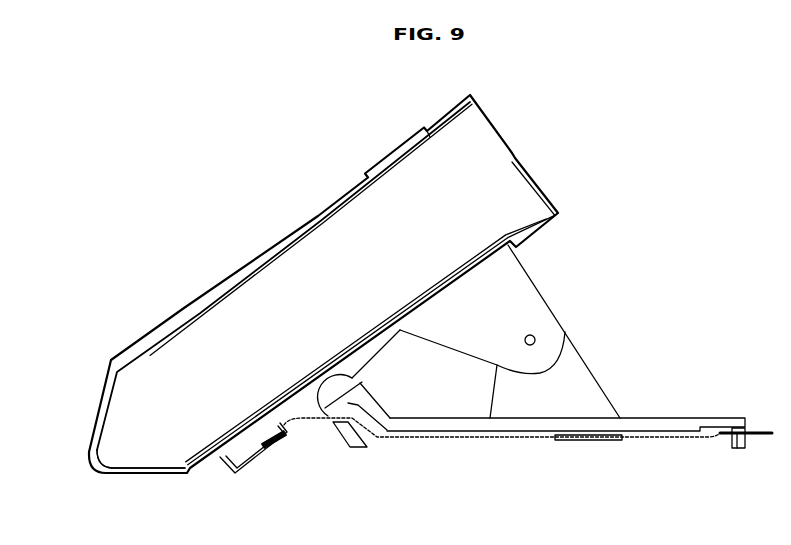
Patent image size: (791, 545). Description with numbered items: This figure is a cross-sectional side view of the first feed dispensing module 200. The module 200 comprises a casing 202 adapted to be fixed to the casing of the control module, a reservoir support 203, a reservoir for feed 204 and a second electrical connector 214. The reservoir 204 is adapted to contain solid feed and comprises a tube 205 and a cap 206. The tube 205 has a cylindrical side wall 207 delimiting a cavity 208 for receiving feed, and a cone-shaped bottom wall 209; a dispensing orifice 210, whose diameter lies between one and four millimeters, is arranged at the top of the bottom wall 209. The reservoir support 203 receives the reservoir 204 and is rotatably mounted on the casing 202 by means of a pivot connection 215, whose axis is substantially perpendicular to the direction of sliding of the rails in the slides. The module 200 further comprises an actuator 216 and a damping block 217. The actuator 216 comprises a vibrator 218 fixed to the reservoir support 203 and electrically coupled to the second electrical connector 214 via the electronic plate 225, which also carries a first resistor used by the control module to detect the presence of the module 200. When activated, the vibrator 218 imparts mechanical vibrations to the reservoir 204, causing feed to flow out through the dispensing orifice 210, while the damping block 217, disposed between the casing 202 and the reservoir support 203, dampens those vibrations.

The first feed dispensing module 200 is at (650, 228).
The casing 202 is at (666, 418).
The reservoir support 203 is at (503, 298).
The reservoir for feed 204 is at (288, 240).
The tube 205 is at (318, 216).
The cap 206 is at (517, 157).
The cylindrical side wall 207 is at (339, 200).
The cavity 208 is at (248, 318).
The cone-shaped bottom wall 209 is at (147, 475).
The dispensing orifice 210 is at (92, 462).
The second electrical connector 214 is at (759, 426).
The pivot connection 215 is at (536, 340).
The actuator 216 is at (255, 458).
The damping block 217 is at (340, 384).
The vibrator 218 is at (264, 451).
The electronic plate 225 is at (588, 447).